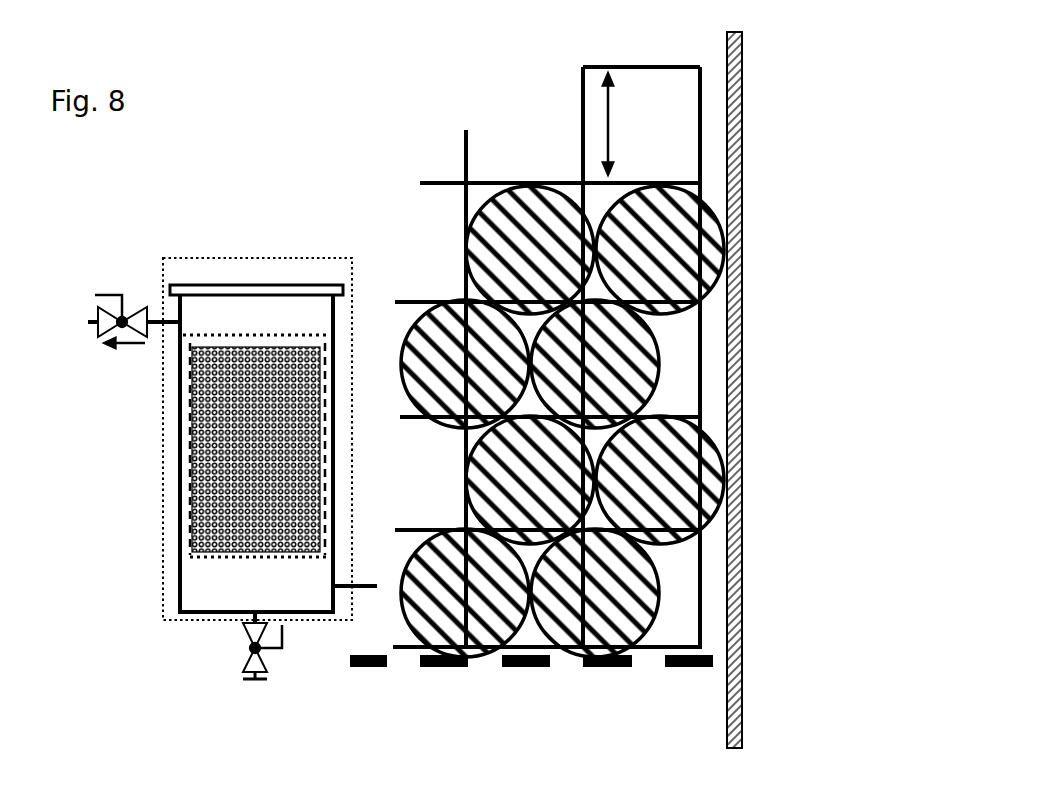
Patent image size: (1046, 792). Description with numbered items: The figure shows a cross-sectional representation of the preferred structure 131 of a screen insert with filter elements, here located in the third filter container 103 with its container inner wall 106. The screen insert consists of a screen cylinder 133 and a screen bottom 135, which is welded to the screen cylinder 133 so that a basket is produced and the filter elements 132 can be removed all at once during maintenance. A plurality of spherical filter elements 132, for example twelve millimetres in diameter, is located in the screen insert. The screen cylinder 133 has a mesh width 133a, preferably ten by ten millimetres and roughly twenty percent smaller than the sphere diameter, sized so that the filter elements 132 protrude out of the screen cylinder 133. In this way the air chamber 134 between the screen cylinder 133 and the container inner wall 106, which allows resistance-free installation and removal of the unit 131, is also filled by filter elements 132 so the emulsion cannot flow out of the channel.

The third filter container 103 is at (238, 285).
The container inner wall 106 is at (178, 386).
The screen insert unit 131 is at (185, 620).
The spherical filter elements 132 is at (190, 430).
The screen cylinder 133 is at (190, 470).
The screen mesh width 133a is at (639, 124).
The air chamber 134 is at (190, 528).
The screen bottom 135 is at (220, 560).